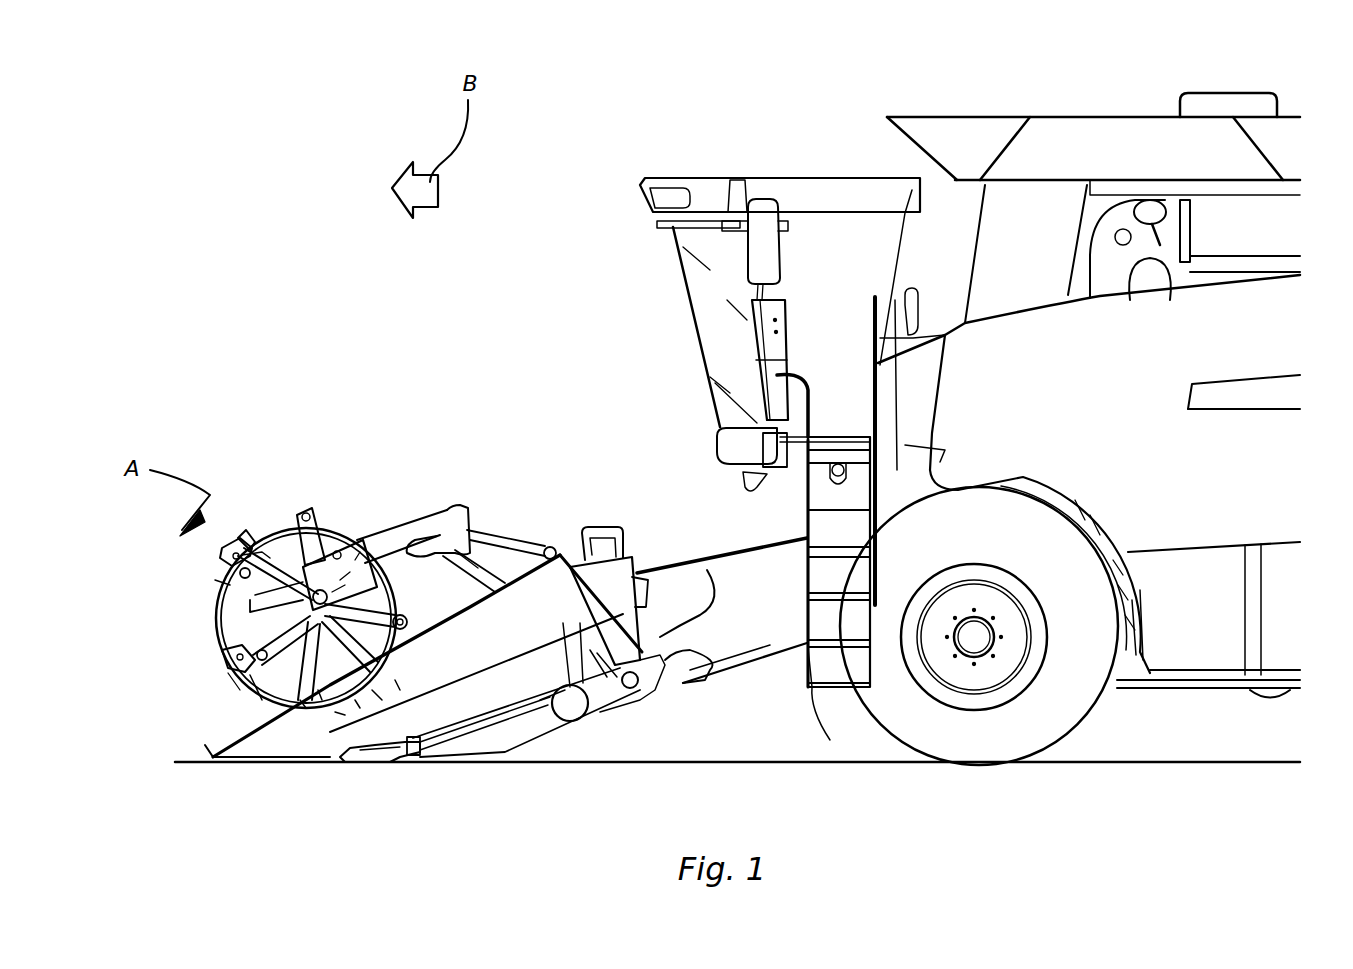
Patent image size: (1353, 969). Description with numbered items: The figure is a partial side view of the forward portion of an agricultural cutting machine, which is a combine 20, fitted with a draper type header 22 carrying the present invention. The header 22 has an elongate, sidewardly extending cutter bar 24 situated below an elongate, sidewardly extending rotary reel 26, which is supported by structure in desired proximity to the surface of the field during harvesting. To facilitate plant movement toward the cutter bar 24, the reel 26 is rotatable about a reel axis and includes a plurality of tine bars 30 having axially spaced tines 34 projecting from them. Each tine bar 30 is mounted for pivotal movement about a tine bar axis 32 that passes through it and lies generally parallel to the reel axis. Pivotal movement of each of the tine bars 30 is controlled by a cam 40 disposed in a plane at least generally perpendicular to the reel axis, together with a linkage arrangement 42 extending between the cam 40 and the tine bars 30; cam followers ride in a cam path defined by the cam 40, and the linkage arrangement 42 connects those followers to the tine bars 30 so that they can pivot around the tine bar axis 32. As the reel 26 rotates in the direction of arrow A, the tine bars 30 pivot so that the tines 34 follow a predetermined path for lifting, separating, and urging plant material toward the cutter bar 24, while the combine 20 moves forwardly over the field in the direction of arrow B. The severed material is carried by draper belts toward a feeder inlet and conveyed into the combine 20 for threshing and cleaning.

The combine 20 is at (1061, 70).
The draper type header 22 is at (388, 438).
The cutter bar 24 is at (355, 768).
The rotary reel 26 is at (378, 510).
The tine bar 30 is at (228, 597).
The tine bar axis 32 is at (271, 624).
The tines 34 is at (223, 563).
The cam 40 is at (217, 638).
The linkage arrangement 42 is at (242, 555).